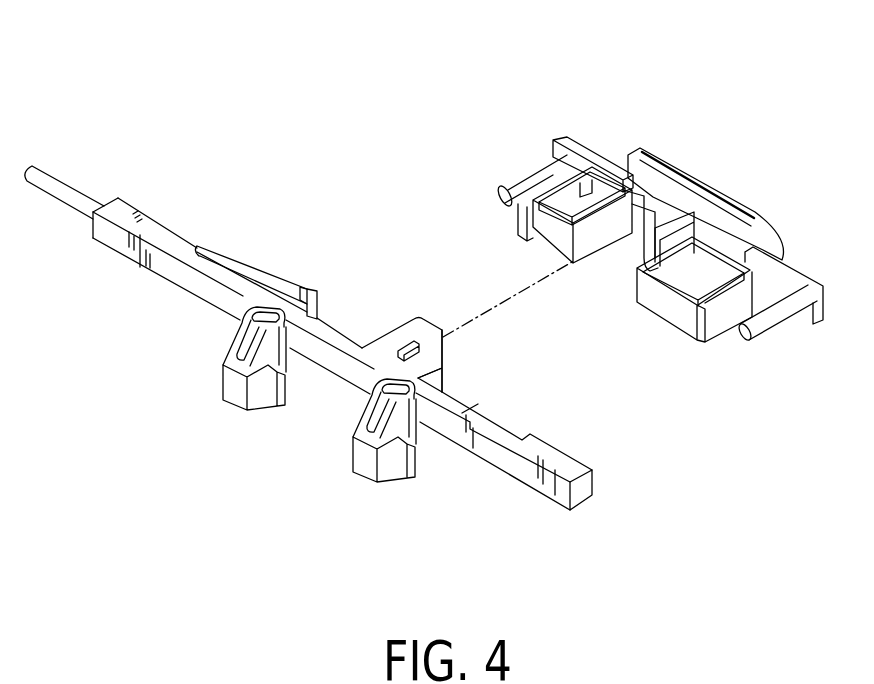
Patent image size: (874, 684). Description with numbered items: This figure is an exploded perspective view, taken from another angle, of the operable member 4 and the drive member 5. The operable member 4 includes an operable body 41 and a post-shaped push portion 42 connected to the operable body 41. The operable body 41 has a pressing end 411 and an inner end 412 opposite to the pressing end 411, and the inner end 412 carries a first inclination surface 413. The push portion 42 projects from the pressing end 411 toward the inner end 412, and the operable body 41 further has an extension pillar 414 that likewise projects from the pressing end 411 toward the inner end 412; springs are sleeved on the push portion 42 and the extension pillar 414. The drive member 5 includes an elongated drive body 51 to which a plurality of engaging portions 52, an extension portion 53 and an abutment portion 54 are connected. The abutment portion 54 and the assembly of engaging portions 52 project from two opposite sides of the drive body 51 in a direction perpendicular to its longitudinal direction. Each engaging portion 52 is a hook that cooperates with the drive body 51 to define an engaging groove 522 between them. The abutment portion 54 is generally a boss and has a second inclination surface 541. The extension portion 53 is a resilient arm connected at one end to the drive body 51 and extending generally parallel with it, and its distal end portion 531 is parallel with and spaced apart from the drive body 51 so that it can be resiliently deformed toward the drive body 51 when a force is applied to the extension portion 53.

The operable member 4 is at (605, 126).
The operable body 41 is at (790, 265).
The pressing end 411 is at (720, 192).
The inner end 412 is at (670, 307).
The first inclination surface 413 is at (640, 228).
The extension pillar 414 is at (777, 323).
The push portion 42 is at (522, 180).
The drive member 5 is at (280, 455).
The drive body 51 is at (583, 490).
The engaging portion 52 is at (265, 397).
The engaging groove 522 is at (290, 363).
The extension portion 53 is at (263, 266).
The distal end portion 531 is at (310, 289).
The abutment portion 54 is at (403, 337).
The second inclination surface 541 is at (443, 360).